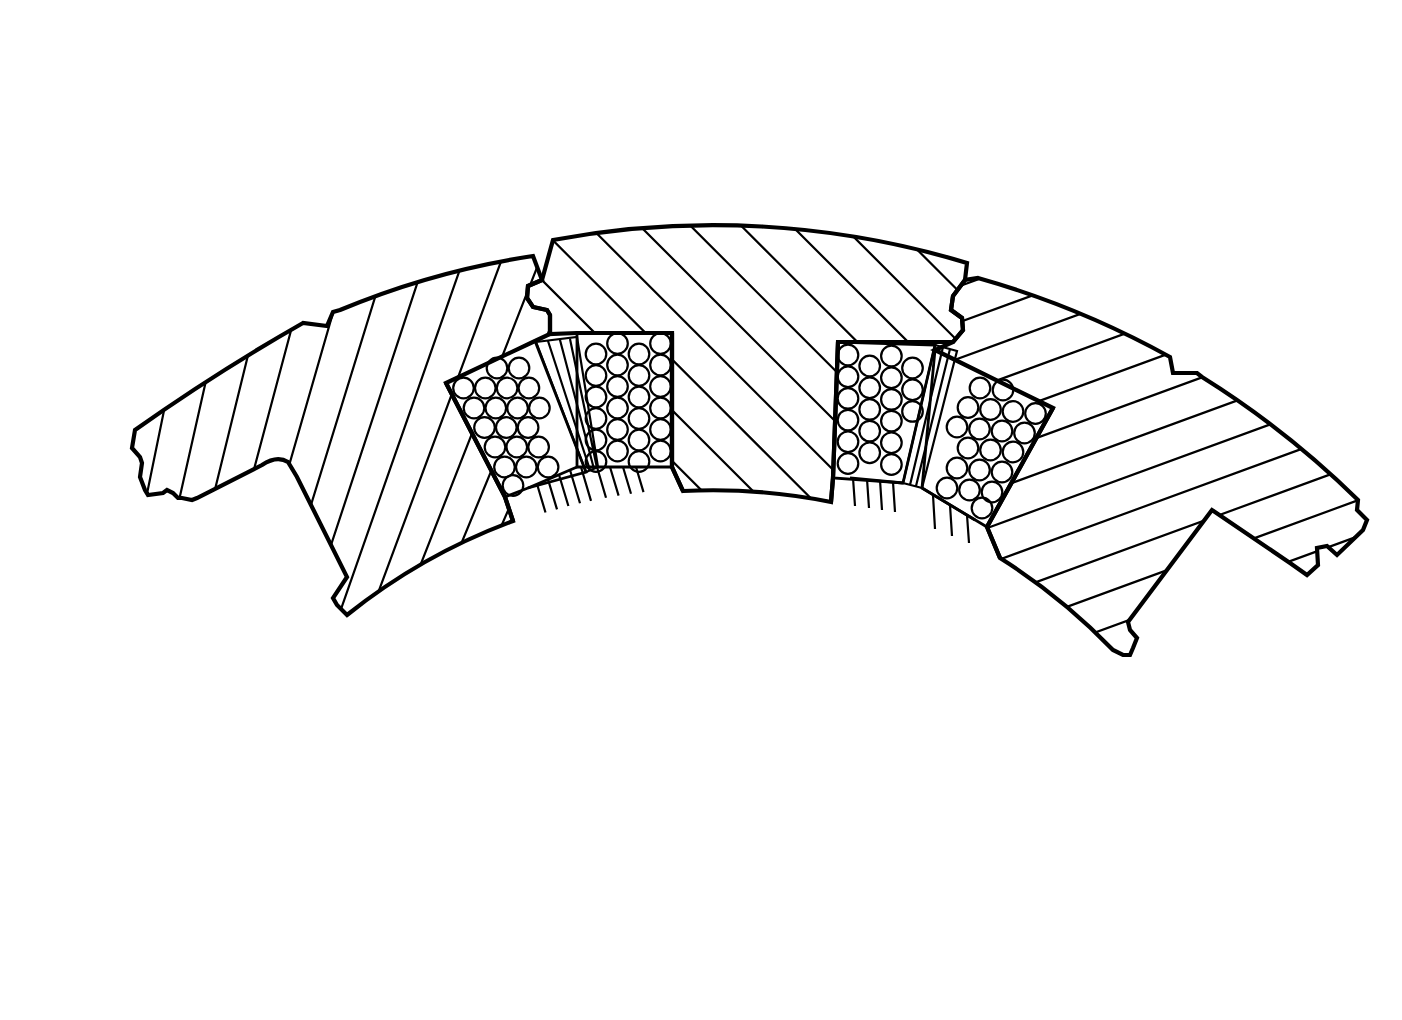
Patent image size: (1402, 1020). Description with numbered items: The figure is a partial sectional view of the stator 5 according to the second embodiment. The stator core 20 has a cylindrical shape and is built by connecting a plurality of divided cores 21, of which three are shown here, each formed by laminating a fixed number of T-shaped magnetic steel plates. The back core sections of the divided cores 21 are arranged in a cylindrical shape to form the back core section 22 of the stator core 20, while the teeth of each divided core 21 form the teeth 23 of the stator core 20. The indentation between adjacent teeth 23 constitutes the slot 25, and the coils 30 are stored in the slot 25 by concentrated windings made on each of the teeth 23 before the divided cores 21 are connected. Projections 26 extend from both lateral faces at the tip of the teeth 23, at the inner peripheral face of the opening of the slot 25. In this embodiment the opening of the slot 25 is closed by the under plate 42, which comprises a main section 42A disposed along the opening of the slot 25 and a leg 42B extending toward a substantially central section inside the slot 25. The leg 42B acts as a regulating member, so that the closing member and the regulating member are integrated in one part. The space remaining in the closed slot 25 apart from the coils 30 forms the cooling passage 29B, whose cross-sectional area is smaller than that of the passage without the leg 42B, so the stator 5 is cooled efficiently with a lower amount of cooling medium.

The stator 5 is at (884, 232).
The stator core 20 is at (720, 229).
The divided core 21 is at (358, 297).
The back core section 22 is at (258, 405).
The teeth 23 is at (417, 537).
The slot 25 is at (640, 333).
The projections 26 is at (523, 508).
The cooling passage 29B is at (503, 362).
The coils 30 is at (497, 367).
The under plate 42 is at (565, 490).
The main section 42A is at (598, 490).
The leg 42B is at (556, 340).